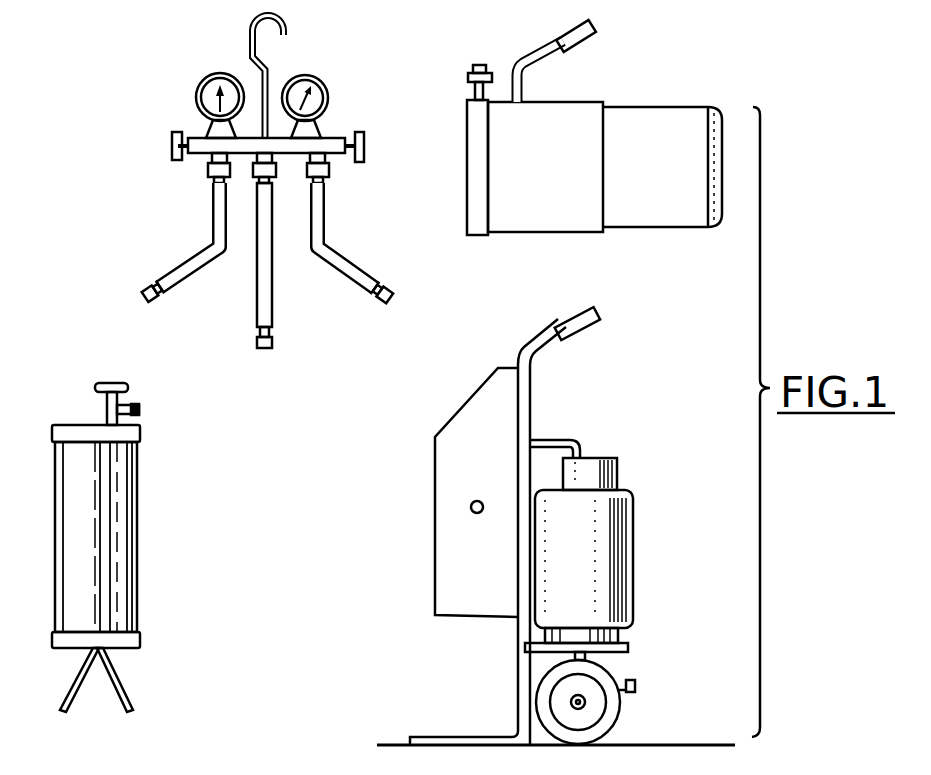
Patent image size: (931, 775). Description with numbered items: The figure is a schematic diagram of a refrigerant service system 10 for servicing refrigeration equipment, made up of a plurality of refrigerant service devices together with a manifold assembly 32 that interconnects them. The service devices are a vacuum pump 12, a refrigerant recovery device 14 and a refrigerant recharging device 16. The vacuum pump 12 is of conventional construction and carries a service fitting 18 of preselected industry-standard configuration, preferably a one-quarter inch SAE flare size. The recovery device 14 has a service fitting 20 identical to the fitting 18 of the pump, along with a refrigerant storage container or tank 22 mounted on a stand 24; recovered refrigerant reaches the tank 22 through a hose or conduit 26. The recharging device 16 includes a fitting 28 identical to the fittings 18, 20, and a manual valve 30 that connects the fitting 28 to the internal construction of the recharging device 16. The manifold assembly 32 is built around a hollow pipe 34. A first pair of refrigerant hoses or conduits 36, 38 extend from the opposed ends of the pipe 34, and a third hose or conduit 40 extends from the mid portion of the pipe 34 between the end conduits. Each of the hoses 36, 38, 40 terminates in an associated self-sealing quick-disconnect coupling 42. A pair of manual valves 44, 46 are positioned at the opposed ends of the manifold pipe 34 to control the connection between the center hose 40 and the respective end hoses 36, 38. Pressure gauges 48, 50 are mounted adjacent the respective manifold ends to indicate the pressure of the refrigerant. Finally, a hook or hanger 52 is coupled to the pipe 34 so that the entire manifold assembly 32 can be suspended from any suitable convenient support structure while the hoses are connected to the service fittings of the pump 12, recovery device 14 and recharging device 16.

The refrigerant service system 10 is at (822, 66).
The vacuum pump 12 is at (565, 104).
The refrigerant recovery device 14 is at (433, 471).
The refrigerant recharging device 16 is at (138, 500).
The service fitting 18 is at (485, 68).
The service fitting 20 is at (470, 510).
The refrigerant storage container or tank 22 is at (632, 532).
The stand 24 is at (628, 646).
The hose or conduit 26 is at (577, 440).
The fitting 28 is at (148, 409).
The manual valve 30 is at (122, 381).
The manifold assembly 32 is at (347, 31).
The hollow pipe 34 is at (330, 137).
The refrigerant hose or conduit 36 is at (211, 246).
The refrigerant hose or conduit 38 is at (326, 226).
The third hose or conduit 40 is at (273, 303).
The self-sealing quick-disconnect coupling 42 is at (148, 291).
The manual valve 44 is at (170, 143).
The manual valve 46 is at (366, 152).
The pressure gauge 48 is at (200, 84).
The pressure gauge 50 is at (323, 83).
The hook or hanger 52 is at (287, 23).